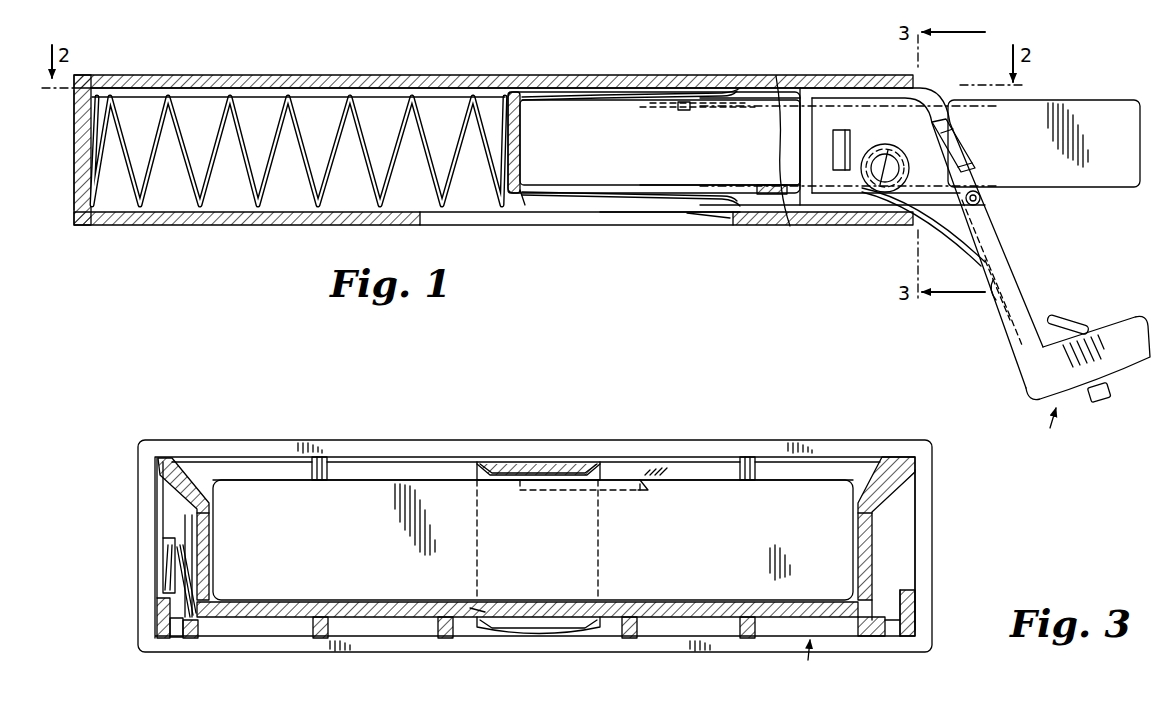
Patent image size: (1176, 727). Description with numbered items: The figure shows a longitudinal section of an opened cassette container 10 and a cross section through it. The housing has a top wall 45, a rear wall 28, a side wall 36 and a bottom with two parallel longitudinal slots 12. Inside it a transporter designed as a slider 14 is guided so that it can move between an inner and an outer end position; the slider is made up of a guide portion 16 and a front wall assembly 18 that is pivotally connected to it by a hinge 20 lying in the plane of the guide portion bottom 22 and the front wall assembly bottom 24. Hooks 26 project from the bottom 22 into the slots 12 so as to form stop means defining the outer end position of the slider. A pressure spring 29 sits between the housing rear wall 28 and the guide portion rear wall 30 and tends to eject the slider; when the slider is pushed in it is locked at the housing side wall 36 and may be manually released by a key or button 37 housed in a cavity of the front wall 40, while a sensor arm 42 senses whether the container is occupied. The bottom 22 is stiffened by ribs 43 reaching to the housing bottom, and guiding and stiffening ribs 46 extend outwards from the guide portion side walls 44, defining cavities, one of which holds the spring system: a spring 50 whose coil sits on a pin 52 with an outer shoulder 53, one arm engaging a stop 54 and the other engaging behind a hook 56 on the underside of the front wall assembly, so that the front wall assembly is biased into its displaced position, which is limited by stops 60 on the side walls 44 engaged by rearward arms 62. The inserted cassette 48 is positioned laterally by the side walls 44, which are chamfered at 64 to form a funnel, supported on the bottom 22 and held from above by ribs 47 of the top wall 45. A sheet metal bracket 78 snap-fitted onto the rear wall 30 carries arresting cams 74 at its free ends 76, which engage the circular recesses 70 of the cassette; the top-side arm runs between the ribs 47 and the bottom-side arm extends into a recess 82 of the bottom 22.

In FIG. 1, the housing 10 is at (246, 75).
In FIG. 3, the housing 10 is at (216, 432).
In FIG. 1, the longitudinal grooves or slots 12 is at (560, 215).
In FIG. 1, the slider 14 is at (1054, 433).
In FIG. 3, the slider 14 is at (812, 668).
In FIG. 1, the guide portion 16 is at (656, 215).
In FIG. 3, the guide portion 16 is at (882, 522).
In FIG. 1, the front wall assembly 18 is at (1008, 362).
In FIG. 1, the hinge 20 is at (982, 200).
In FIG. 1, the bottom of guide portion 22 is at (760, 185).
In FIG. 3, the bottom of guide portion 22 is at (712, 603).
In FIG. 1, the front wall assembly bottom 24 is at (1008, 280).
In FIG. 1, the wedge 26 is at (728, 218).
In FIG. 1, the housing rear wall 28 is at (74, 200).
In FIG. 1, the pressure spring 29 is at (208, 215).
In FIG. 1, the guide portion rear wall 30 is at (524, 135).
In FIG. 3, the guide portion rear wall 30 is at (698, 480).
In FIG. 3, the housing side wall 36 is at (920, 560).
In FIG. 1, the key or button 37 is at (1096, 400).
In FIG. 1, the front wall 40 is at (1132, 360).
In FIG. 1, the sensor arm 42 is at (1068, 322).
In FIG. 3, the ribs 43 is at (320, 640).
In FIG. 3, the guide portion side walls 44 is at (212, 518).
In FIG. 1, the top wall 45 is at (525, 88).
In FIG. 3, the top wall 45 is at (455, 445).
In FIG. 1, the guiding and stiffening ribs 46 is at (846, 92).
In FIG. 3, the guiding and stiffening ribs 46 is at (168, 462).
In FIG. 1, the ribs 47 is at (395, 88).
In FIG. 3, the ribs 47 is at (322, 482).
In FIG. 1, the cassette 48 is at (1102, 100).
In FIG. 3, the cassette 48 is at (378, 488).
In FIG. 1, the spring 50 is at (958, 222).
In FIG. 3, the spring 50 is at (200, 575).
In FIG. 1, the pin 52 is at (892, 150).
In FIG. 3, the pin 52 is at (176, 546).
In FIG. 1, the outer shoulder 53 is at (879, 192).
In FIG. 3, the outer shoulder 53 is at (168, 578).
In FIG. 1, the stop 54 is at (838, 143).
In FIG. 3, the stop 54 is at (188, 518).
In FIG. 1, the hook 56 is at (995, 296).
In FIG. 1, the stops 60 is at (950, 128).
In FIG. 1, the arms 62 is at (958, 150).
In FIG. 3, the arms 62 is at (156, 610).
In FIG. 3, the chamfer 64 is at (192, 470).
In FIG. 1, the circular depressions or recesses 70 is at (686, 110).
In FIG. 3, the circular depressions or recesses 70 is at (640, 490).
In FIG. 1, the arresting cams 74 is at (672, 107).
In FIG. 3, the arresting cams 74 is at (535, 488).
In FIG. 1, the free ends of bracket arms 76 is at (600, 97).
In FIG. 3, the free ends of bracket arms 76 is at (522, 472).
In FIG. 1, the sheet metal bracket 78 is at (534, 200).
In FIG. 3, the sheet metal bracket 78 is at (605, 564).
In FIG. 1, the recess 82 is at (760, 195).
In FIG. 3, the recess 82 is at (470, 606).